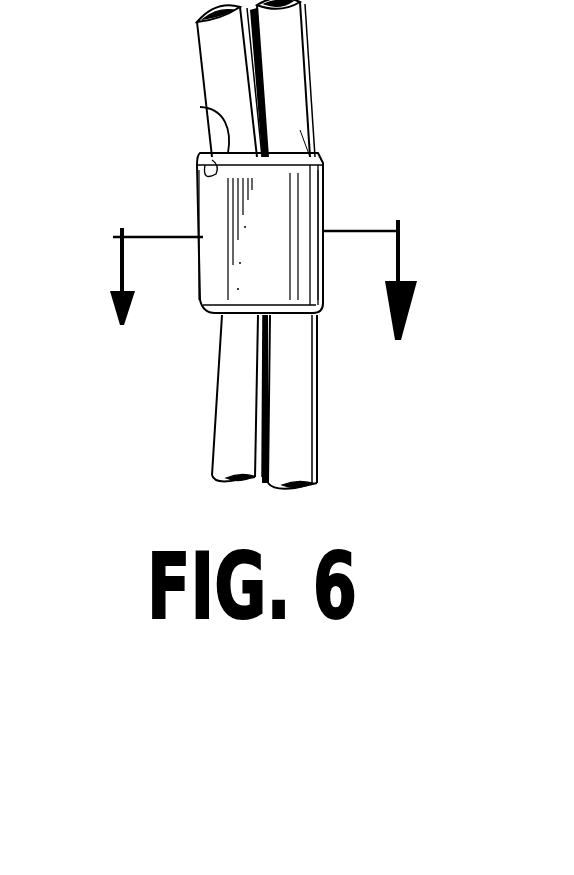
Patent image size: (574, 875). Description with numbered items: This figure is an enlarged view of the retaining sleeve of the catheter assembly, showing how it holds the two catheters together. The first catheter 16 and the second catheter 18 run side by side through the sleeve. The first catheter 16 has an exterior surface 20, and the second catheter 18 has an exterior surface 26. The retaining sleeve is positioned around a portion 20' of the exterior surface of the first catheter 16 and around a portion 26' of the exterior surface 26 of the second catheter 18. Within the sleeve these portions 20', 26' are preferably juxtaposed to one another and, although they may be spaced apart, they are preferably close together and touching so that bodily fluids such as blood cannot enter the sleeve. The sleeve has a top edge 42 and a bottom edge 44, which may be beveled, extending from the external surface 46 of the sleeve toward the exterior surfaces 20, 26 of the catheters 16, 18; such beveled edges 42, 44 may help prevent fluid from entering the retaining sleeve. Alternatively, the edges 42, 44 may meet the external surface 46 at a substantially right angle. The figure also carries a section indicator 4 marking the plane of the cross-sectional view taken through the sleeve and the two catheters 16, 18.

The section line 4- 4 is at (264, 280).
The first catheter 16 is at (317, 78).
The second catheter 18 is at (192, 58).
The exterior surface of the first catheter 20 is at (328, 402).
The portion of the exterior surface of the first catheter 20' is at (361, 135).
The exterior surface of the second catheter 26 is at (205, 399).
The portion of the exterior surface of the second catheter 26' is at (170, 120).
The top edge of the retaining sleeve 42 is at (207, 168).
The bottom edge of the retaining sleeve 44 is at (318, 318).
The external surface of the retaining sleeve 46 is at (288, 202).